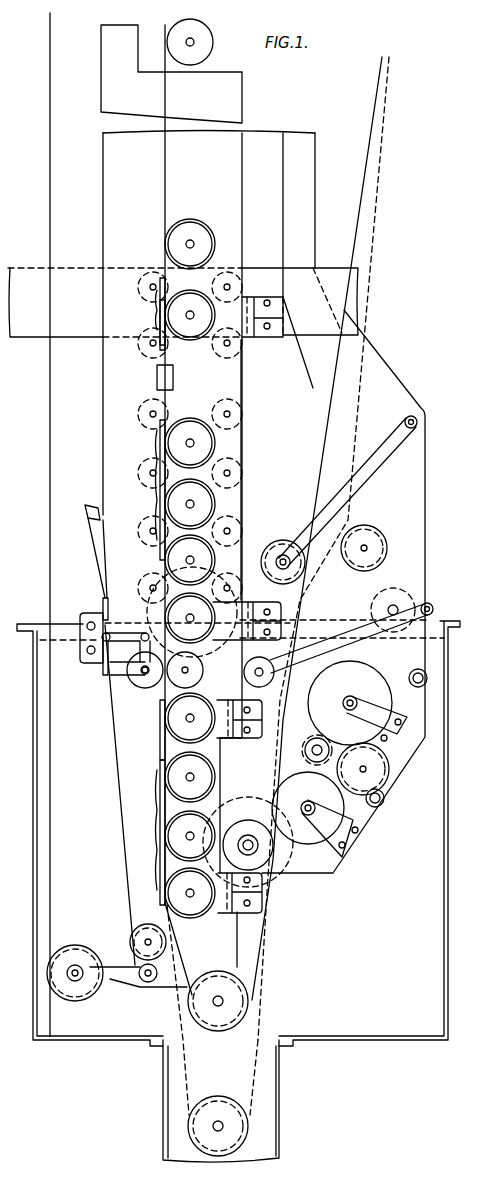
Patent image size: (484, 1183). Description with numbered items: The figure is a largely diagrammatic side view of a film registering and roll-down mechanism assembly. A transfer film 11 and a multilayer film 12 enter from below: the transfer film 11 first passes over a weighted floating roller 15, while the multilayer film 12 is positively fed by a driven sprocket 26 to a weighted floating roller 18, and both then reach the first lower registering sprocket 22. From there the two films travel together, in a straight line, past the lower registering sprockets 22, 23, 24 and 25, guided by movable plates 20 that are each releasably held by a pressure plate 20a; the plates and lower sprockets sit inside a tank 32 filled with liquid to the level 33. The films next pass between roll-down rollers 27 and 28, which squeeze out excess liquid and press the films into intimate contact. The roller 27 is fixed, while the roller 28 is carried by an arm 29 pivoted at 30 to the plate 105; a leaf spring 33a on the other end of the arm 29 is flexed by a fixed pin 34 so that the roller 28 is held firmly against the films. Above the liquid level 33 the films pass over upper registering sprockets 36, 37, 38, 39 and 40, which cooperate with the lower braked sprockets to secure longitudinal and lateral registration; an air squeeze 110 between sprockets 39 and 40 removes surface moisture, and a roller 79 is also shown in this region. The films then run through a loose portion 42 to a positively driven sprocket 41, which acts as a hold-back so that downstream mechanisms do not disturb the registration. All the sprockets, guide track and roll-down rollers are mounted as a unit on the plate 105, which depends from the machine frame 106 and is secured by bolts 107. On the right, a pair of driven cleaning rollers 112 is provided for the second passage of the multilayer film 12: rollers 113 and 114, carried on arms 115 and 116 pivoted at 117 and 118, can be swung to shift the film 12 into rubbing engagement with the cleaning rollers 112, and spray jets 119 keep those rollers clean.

The transfer film 11 is at (50, 398).
The multilayer film 12 is at (365, 192).
The weighted floating roller 15 is at (90, 931).
The weighted floating roller 18 is at (192, 1009).
The movable plate 20 is at (163, 278).
The pressure plate 20a is at (160, 737).
The first lower registering sprocket 22 is at (190, 893).
The lower registering sprocket 23 is at (190, 836).
The lower registering sprocket 24 is at (190, 777).
The lower registering sprocket 25 is at (190, 718).
The driven sprocket 26 is at (248, 822).
The roll-down roller 27 is at (201, 679).
The roll-down roller 28 is at (140, 690).
The arm 29 is at (100, 595).
The pivot 30 is at (103, 652).
The tank 32 is at (444, 934).
The liquid level 33 is at (40, 638).
The leaf spring 33a is at (84, 558).
The fixed pin 34 is at (98, 510).
The upper film registering sprocket 36 is at (190, 618).
The upper film registering sprocket 37 is at (190, 560).
The upper film registering sprocket 38 is at (190, 504).
The upper film registering sprocket 39 is at (192, 424).
The upper registering sprocket 40 is at (190, 338).
The positively driven sprocket 41 is at (212, 43).
The portion of the film strips 42 is at (165, 98).
The roller 79 is at (205, 235).
The plate 105 is at (240, 437).
The machine frame 106 is at (297, 142).
The bolts 107 is at (267, 333).
The air squeeze 110 is at (157, 378).
The cleaning rollers 112 is at (339, 691).
The roller 113 is at (283, 548).
The roller 114 is at (255, 614).
The arm 115 is at (378, 458).
The arm 116 is at (352, 618).
The pivot 117 is at (412, 415).
The pivot 118 is at (429, 603).
The spray jets 119 is at (417, 669).